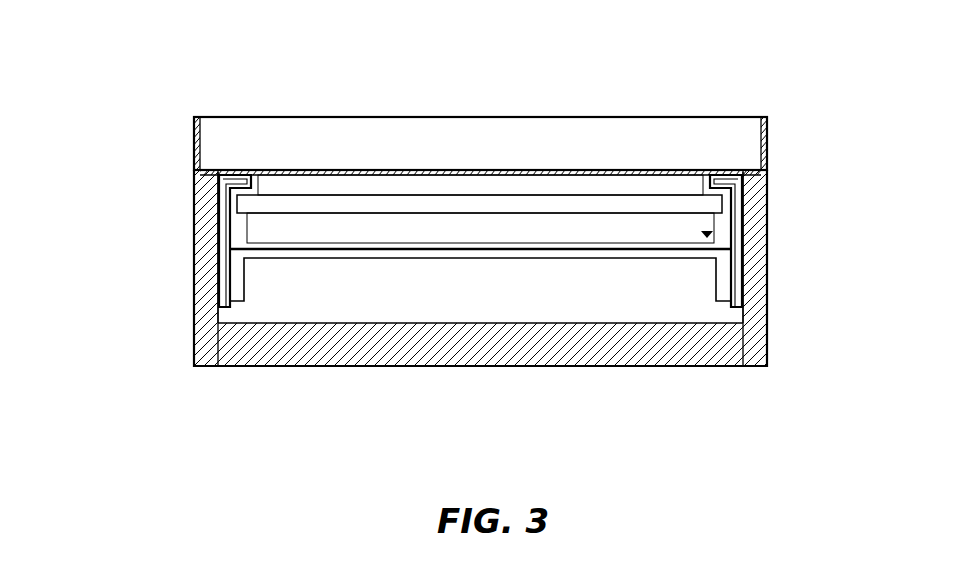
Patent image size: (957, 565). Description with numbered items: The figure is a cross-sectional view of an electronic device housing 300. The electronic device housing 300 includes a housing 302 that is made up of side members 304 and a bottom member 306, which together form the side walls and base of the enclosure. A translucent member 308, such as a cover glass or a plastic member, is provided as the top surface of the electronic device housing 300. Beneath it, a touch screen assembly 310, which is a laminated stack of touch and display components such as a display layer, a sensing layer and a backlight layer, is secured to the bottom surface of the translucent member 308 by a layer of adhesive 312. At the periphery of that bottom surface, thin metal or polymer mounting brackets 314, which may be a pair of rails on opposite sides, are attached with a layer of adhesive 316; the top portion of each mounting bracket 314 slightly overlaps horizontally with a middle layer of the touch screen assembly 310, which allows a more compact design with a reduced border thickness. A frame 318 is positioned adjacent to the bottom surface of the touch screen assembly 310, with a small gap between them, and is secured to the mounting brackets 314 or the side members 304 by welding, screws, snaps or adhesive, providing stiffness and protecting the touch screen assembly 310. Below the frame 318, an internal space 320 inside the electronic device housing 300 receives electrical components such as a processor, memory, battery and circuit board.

The electronic device housing 300 is at (136, 58).
The housing 302 is at (150, 365).
The side members 304 is at (192, 285).
The bottom member 306 is at (368, 373).
The translucent member 308 is at (500, 154).
The touch screen assembly 310 is at (707, 241).
The layer of adhesive 312 is at (540, 170).
The mounting brackets 314 is at (200, 201).
The layer of adhesive 316 is at (228, 172).
The frame 318 is at (348, 254).
The internal space 320 is at (501, 304).